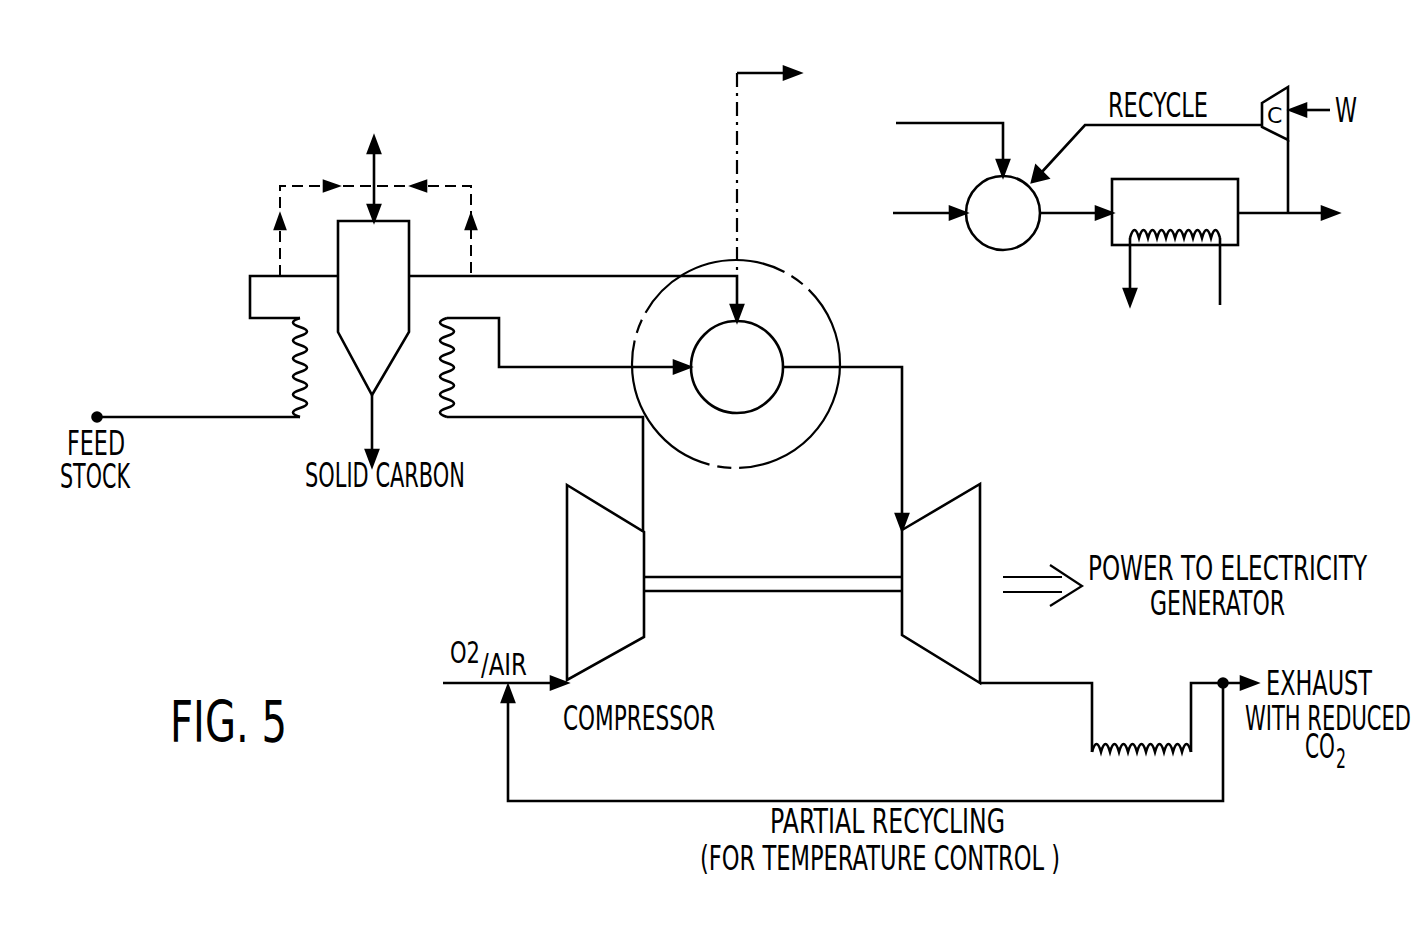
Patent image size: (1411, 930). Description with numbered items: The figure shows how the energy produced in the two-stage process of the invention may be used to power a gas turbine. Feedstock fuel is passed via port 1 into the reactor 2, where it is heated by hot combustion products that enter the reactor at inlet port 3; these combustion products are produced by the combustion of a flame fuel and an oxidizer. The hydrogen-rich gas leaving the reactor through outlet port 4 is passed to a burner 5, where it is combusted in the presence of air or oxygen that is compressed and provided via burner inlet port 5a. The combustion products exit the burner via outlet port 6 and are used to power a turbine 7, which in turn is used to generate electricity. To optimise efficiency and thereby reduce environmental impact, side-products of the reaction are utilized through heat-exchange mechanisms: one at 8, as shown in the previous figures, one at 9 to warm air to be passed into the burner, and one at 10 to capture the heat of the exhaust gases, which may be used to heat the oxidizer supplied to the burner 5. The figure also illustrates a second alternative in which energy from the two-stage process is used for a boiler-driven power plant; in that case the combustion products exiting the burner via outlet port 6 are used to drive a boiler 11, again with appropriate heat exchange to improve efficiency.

The port 1 is at (313, 276).
The reactor 2 is at (381, 323).
The inlet port 3 is at (374, 206).
The outlet port 4 is at (443, 276).
The burner 5 is at (746, 375).
The burner inlet port 5a is at (611, 365).
The outlet port 6 is at (822, 365).
The turbine 7 is at (949, 605).
The heat-exchange mechanism 8 is at (291, 365).
The heat-exchange mechanism 9 is at (453, 365).
The heat-exchange mechanism 10 is at (1106, 755).
The boiler 11 is at (1153, 178).